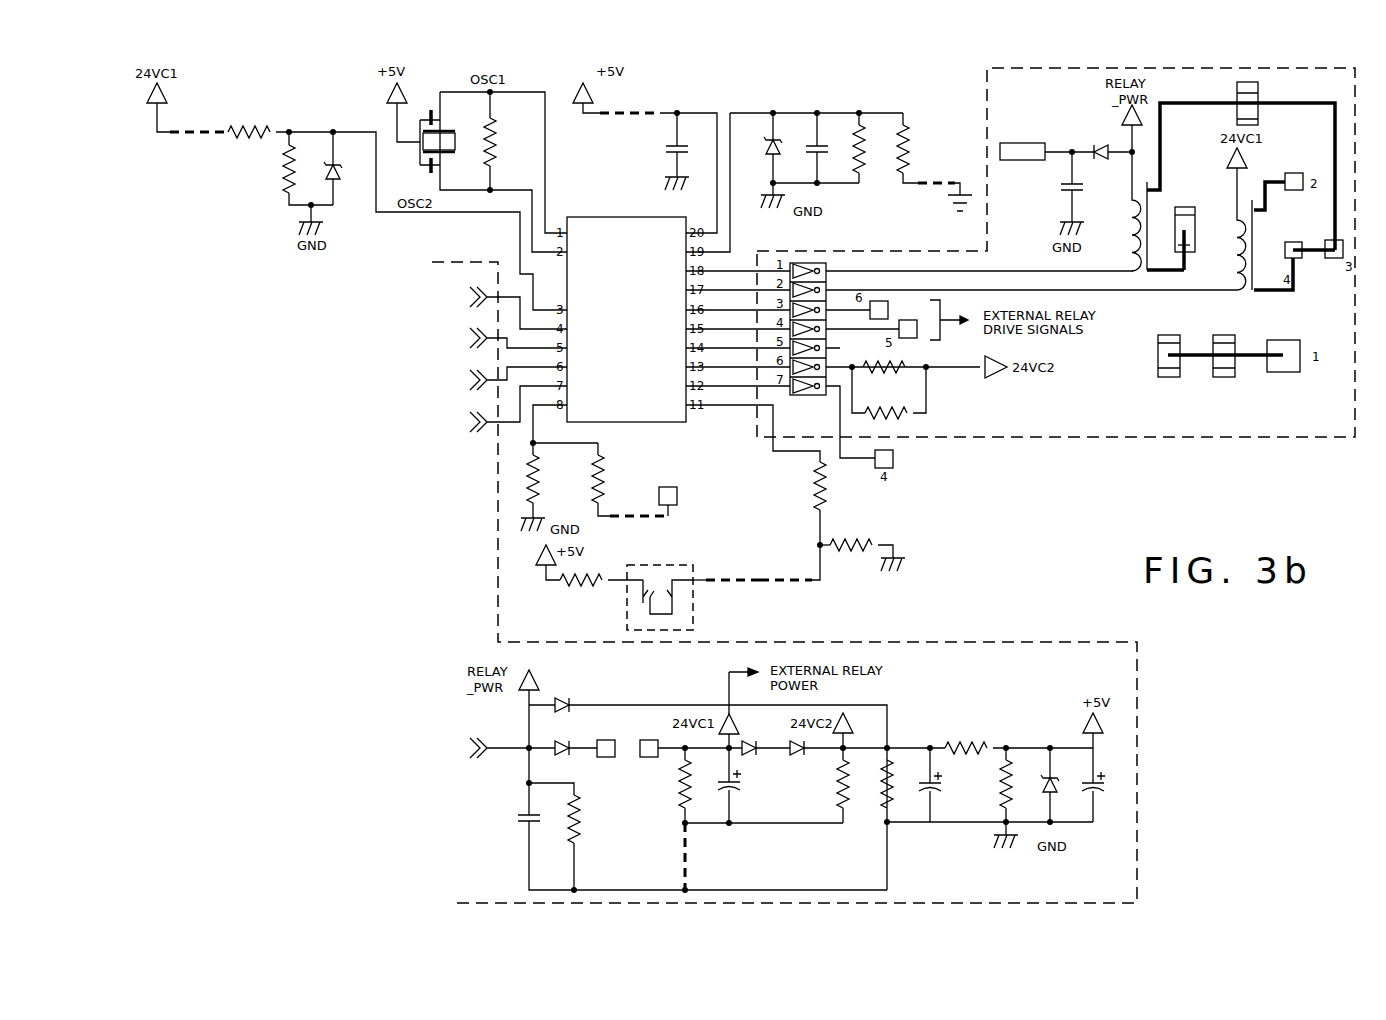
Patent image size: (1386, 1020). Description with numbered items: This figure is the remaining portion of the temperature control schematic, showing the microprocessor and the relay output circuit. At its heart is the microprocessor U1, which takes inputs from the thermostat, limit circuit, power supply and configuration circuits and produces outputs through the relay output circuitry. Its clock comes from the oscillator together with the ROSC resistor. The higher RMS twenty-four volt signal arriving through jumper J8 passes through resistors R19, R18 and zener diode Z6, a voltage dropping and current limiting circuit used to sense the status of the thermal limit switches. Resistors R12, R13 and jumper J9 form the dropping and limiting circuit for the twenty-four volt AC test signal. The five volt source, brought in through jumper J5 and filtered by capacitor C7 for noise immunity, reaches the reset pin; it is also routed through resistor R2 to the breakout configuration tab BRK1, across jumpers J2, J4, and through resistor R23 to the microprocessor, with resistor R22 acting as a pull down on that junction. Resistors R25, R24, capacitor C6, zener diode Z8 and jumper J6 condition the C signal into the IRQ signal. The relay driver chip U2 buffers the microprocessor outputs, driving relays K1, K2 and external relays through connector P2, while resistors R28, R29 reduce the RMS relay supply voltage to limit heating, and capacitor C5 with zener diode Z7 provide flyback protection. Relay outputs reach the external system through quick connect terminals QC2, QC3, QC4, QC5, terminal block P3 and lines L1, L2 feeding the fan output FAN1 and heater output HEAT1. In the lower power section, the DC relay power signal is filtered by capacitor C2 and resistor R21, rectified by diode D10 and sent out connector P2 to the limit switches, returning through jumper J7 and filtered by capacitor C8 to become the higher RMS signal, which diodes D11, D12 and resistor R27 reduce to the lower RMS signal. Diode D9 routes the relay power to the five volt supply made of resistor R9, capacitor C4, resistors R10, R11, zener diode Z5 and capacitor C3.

The jumper J8 is at (199, 123).
The resistor R19 is at (249, 123).
The resistor R18 is at (293, 168).
The zener diode Z6 is at (340, 168).
The ROSC resistor ROSC is at (509, 141).
The microprocessor U1 is at (626, 319).
The resistor R13 is at (548, 480).
The resistor R12 is at (613, 479).
The jumper J9 is at (639, 506).
The resistor R2 is at (581, 588).
The breaker BRK1 is at (660, 588).
The jumper J2 is at (733, 570).
The jumper J4 is at (786, 570).
The resistor R23 is at (803, 486).
The pull down resistor R22 is at (856, 541).
The jumper J5 is at (630, 102).
The capacitor C7 is at (665, 145).
The zener diode Z8 is at (766, 154).
The capacitor C6 is at (811, 148).
The resistor R24 is at (845, 148).
The resistor R25 is at (916, 148).
The jumper J6 is at (936, 173).
The relay driver chip U2 is at (808, 338).
The connector P2 is at (767, 529).
The resistor R28 is at (776, 592).
The resistor R29 is at (896, 400).
The zener diode Z7 is at (1099, 142).
The capacitor C5 is at (1059, 187).
The relay K2 is at (1126, 211).
The quick connect terminal QC5 is at (1172, 230).
The fan FAN1 is at (1186, 180).
The line L1 is at (1241, 187).
The quick connect terminal QC4 is at (1264, 99).
The relay K1 is at (1231, 229).
The heater HEAT1 is at (1279, 183).
The terminal block P3 is at (1298, 282).
The quick connect terminal QC2 is at (1169, 346).
The quick connect terminal QC3 is at (1224, 346).
The line L2 is at (1225, 377).
The diode D9 is at (566, 696).
The diode D10 is at (558, 739).
The resistor R21 is at (572, 836).
The capacitor C2 is at (515, 817).
The diode D11 is at (757, 756).
The diode D12 is at (804, 756).
The capacitor C8 is at (737, 788).
The jumper J7 is at (673, 856).
The resistor R27 is at (828, 784).
The resistor R9 is at (899, 781).
The resistor R10 is at (966, 739).
The capacitor C4 is at (939, 785).
The resistor R11 is at (990, 785).
The zener diode Z5 is at (1056, 785).
The capacitor C3 is at (1098, 791).